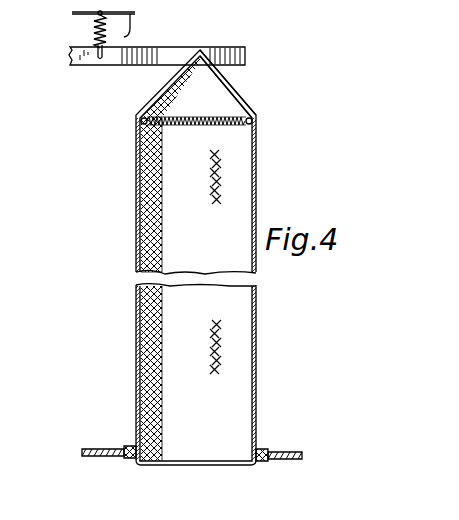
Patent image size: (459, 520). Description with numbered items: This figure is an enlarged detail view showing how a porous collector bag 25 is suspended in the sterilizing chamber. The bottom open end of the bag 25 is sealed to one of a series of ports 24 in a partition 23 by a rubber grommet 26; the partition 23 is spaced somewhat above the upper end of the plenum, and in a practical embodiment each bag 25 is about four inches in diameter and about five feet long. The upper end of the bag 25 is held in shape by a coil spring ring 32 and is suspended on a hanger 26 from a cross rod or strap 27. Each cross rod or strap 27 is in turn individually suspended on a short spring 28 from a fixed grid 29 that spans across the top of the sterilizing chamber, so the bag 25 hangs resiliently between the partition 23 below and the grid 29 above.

The partition 23 is at (90, 455).
The ports 24 is at (278, 465).
The porous bag 25 is at (136, 212).
The rubber grommet 26 is at (242, 94).
The cross rod or strap 27 is at (245, 57).
The short spring 28 is at (94, 34).
The fixed grid 29 is at (124, 37).
The coil spring ring 32 is at (252, 128).